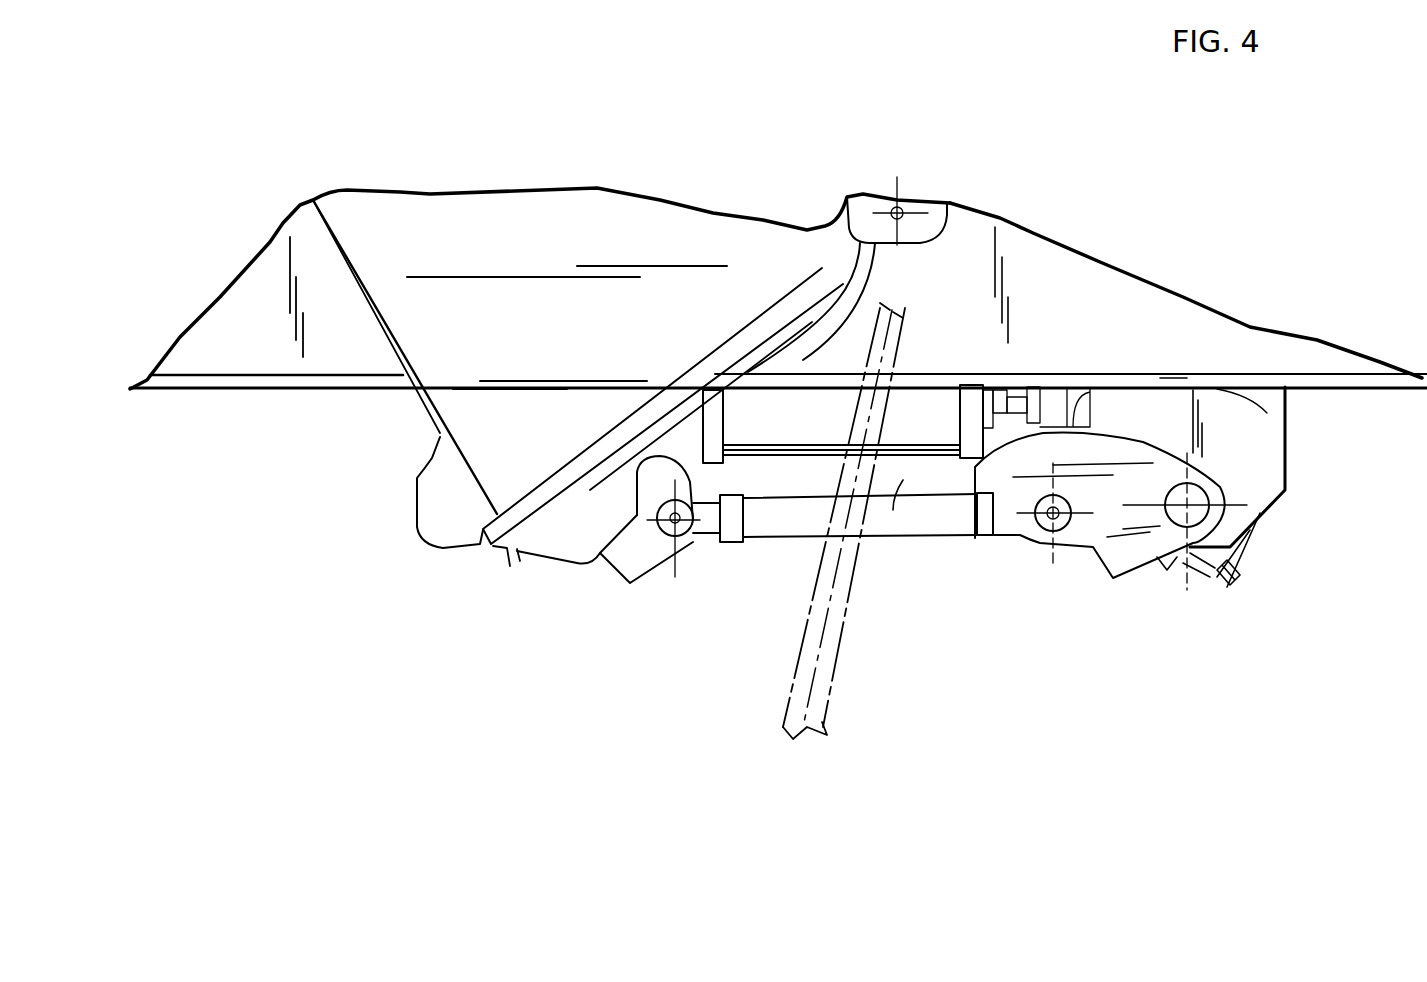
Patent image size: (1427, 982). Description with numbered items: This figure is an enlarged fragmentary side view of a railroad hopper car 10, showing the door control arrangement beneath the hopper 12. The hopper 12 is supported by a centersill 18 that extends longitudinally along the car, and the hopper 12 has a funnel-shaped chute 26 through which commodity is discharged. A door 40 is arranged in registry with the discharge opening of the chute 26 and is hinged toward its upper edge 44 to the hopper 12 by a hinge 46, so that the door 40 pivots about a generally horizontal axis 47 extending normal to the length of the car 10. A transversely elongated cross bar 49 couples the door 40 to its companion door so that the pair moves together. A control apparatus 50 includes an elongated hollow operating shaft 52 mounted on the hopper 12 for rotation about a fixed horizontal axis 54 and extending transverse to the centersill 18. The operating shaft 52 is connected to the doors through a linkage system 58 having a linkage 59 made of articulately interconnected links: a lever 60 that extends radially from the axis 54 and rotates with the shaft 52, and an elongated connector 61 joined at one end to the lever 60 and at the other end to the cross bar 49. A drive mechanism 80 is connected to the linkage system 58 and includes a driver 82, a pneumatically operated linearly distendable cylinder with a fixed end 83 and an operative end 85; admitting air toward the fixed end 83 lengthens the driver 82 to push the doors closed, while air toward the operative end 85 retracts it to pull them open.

The railroad hopper car 10 is at (410, 125).
The hopper 12 is at (770, 212).
The centersill 18 is at (1313, 357).
The funnel-shaped chute 26 is at (572, 238).
The door 40 is at (511, 572).
The upper edge 44 is at (828, 283).
The hinge 46 is at (895, 278).
The horizontal axis 47 is at (905, 207).
The cross bar 49 is at (586, 556).
The control apparatus 50 is at (1117, 608).
The operating shaft 52 is at (1193, 503).
The fixed horizontal axis 54 is at (1262, 515).
The linkage system 58 is at (937, 552).
The linkage 59 is at (801, 550).
The lever 60 is at (1133, 558).
The elongated connector 61 is at (917, 484).
The drive mechanism 80 is at (893, 470).
The driver 82 is at (900, 397).
The fixed end 83 is at (700, 400).
The operative end 85 is at (972, 398).